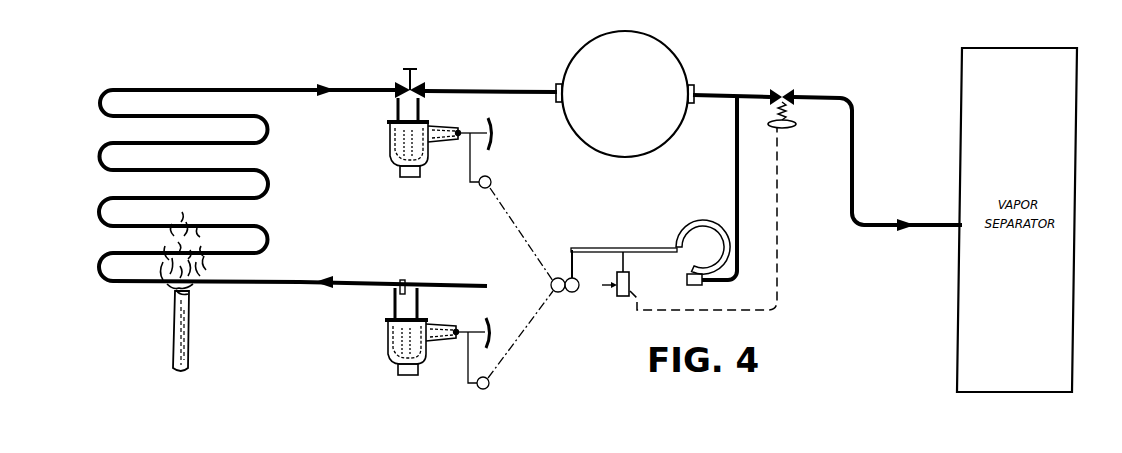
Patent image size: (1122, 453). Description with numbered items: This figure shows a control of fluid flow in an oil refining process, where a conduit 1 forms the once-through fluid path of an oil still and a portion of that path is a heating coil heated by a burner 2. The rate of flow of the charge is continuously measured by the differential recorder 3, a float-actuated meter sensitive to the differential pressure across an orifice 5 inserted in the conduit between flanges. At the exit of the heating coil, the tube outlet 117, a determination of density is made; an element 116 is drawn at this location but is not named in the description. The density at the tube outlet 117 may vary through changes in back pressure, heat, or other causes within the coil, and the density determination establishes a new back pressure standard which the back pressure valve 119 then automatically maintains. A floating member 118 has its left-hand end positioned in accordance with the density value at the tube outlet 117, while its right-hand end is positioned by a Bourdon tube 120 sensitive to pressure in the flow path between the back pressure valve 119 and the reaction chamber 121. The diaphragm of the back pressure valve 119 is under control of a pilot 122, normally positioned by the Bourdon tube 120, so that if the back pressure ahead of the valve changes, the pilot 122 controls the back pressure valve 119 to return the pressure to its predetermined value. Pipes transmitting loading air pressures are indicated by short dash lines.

The conduit 1 is at (265, 284).
The burner 2 is at (189, 331).
The differential recorder 3 is at (388, 337).
The orifice 5 is at (403, 280).
The flow regulator 116 is at (390, 141).
The tube outlet 117 is at (418, 85).
The floating member 118 is at (573, 247).
The back pressure valve 119 is at (787, 92).
The Bourdon tube 120 is at (684, 232).
The reaction chamber 121 is at (661, 150).
The pilot 122 is at (626, 270).